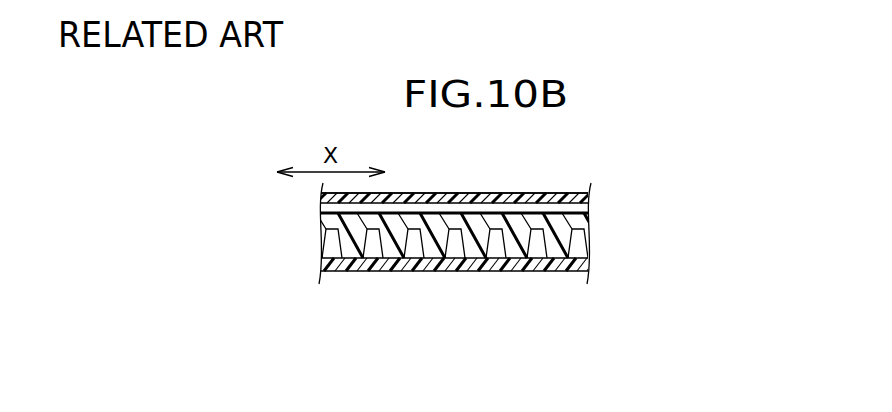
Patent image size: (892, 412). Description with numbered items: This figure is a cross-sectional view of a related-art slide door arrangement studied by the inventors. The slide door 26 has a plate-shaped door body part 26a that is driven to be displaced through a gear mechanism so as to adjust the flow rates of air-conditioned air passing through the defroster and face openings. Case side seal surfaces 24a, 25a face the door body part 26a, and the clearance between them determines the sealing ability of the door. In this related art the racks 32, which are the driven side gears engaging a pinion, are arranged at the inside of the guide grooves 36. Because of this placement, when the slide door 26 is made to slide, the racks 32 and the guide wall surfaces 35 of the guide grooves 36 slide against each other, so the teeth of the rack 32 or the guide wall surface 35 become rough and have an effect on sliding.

The case side seal surface 24a is at (585, 201).
The case side seal surface 25a is at (526, 209).
The slide door 26 is at (415, 212).
The door body part 26a is at (453, 226).
The rack 32 is at (458, 250).
The guide wall surface 35 is at (587, 268).
The guide groove 36 is at (741, 199).